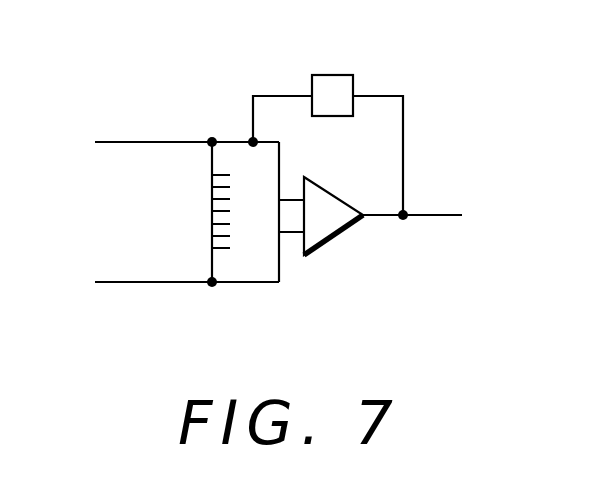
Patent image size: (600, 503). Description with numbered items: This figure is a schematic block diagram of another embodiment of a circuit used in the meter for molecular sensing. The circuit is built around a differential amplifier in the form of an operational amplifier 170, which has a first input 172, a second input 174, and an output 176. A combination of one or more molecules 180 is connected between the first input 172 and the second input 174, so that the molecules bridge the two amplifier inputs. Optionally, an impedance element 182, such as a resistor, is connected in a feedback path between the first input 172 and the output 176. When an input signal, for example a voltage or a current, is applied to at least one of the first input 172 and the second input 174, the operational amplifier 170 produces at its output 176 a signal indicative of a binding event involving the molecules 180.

The operational amplifier 170 is at (338, 198).
The first input 172 is at (227, 140).
The second input 174 is at (247, 283).
The output 176 is at (378, 215).
The combination of one or more molecules 180 is at (212, 213).
The impedance element 182 is at (330, 75).